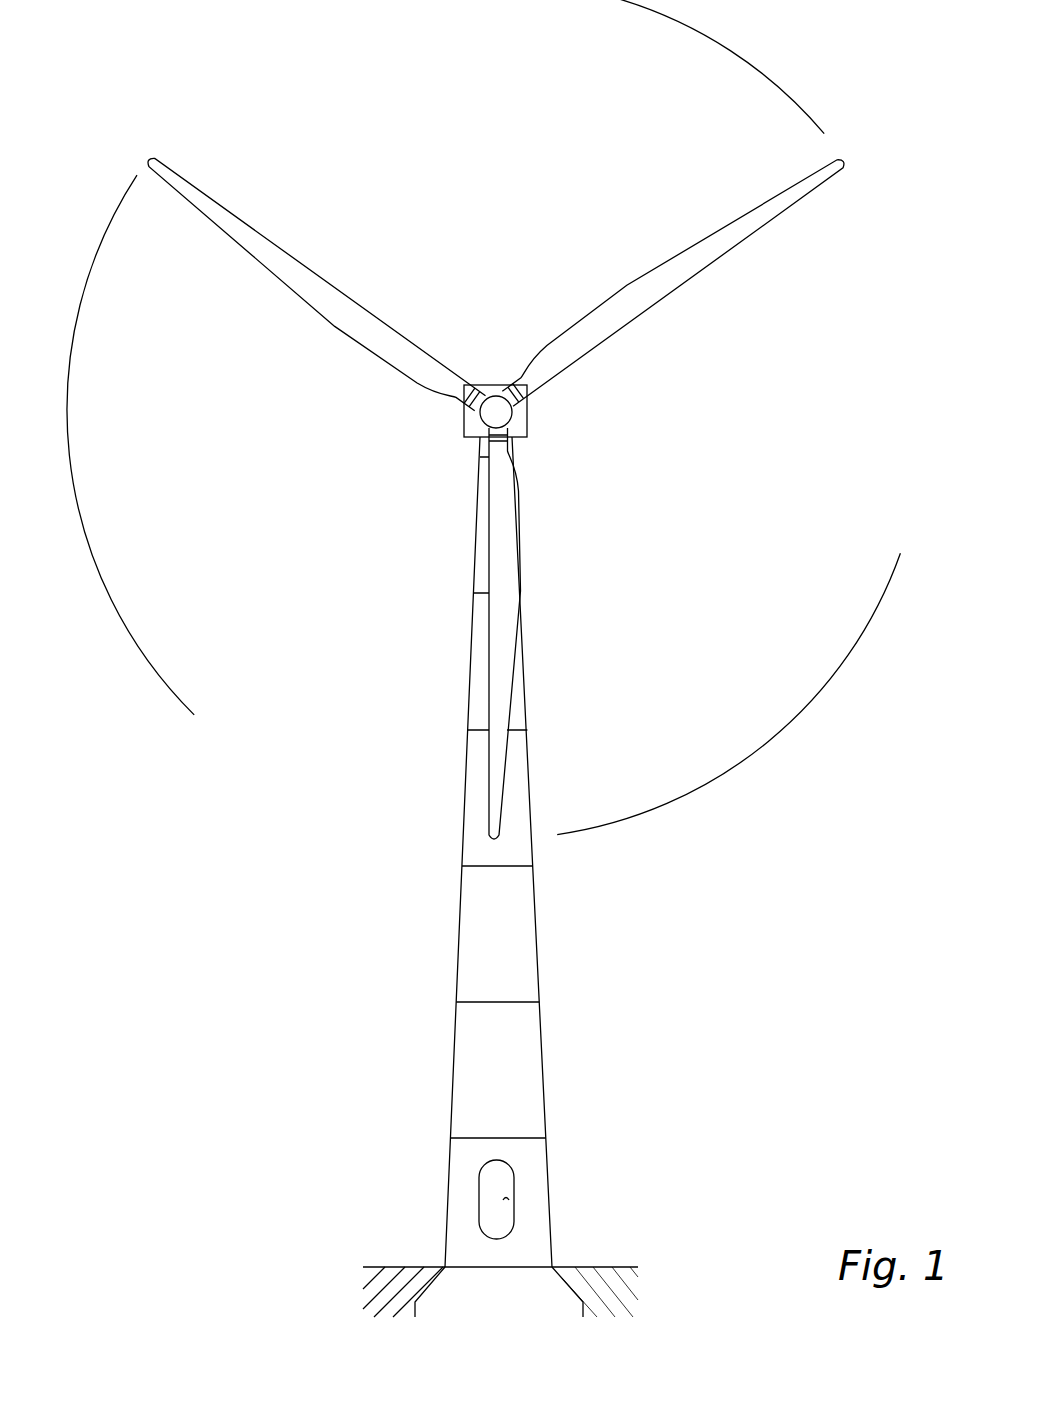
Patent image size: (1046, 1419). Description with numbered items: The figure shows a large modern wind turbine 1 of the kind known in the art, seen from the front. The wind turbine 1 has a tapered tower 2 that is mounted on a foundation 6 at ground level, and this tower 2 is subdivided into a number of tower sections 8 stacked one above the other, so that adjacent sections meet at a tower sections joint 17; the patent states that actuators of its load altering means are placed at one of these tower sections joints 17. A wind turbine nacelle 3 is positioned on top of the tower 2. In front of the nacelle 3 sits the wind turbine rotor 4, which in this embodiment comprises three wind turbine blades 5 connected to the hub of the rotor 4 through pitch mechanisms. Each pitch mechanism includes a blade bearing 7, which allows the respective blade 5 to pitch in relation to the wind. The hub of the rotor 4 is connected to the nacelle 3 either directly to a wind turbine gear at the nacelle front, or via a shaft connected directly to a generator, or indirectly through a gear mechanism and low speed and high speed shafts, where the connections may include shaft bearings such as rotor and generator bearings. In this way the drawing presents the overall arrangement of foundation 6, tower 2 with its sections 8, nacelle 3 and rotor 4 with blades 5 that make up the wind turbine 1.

The wind turbine 1 is at (483, 658).
The tapered tower 2 is at (480, 852).
The wind turbine nacelle 3 is at (528, 433).
The wind turbine rotor 4 is at (495, 402).
The wind turbine blade 5 is at (498, 680).
The foundation 6 is at (568, 1283).
The blade bearing 7 is at (496, 400).
The tower section 8 is at (505, 1080).
The tower sections joint 17 is at (473, 866).